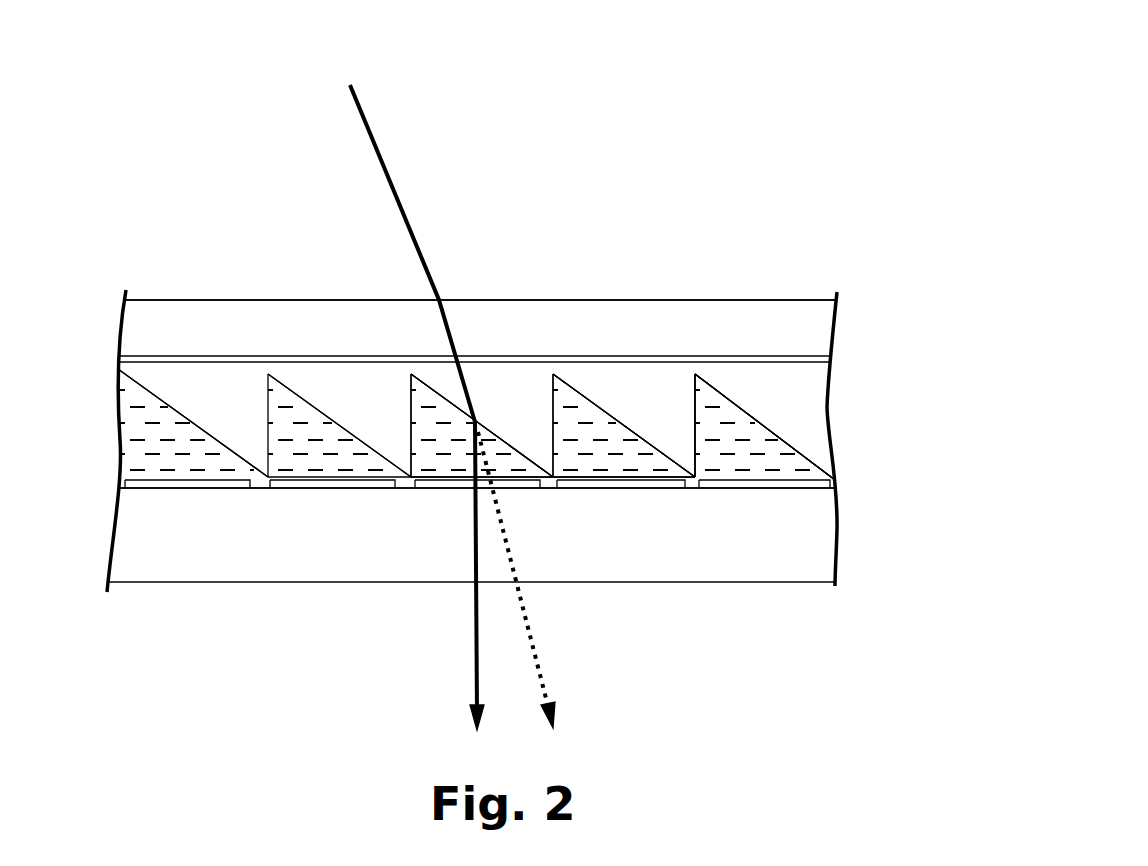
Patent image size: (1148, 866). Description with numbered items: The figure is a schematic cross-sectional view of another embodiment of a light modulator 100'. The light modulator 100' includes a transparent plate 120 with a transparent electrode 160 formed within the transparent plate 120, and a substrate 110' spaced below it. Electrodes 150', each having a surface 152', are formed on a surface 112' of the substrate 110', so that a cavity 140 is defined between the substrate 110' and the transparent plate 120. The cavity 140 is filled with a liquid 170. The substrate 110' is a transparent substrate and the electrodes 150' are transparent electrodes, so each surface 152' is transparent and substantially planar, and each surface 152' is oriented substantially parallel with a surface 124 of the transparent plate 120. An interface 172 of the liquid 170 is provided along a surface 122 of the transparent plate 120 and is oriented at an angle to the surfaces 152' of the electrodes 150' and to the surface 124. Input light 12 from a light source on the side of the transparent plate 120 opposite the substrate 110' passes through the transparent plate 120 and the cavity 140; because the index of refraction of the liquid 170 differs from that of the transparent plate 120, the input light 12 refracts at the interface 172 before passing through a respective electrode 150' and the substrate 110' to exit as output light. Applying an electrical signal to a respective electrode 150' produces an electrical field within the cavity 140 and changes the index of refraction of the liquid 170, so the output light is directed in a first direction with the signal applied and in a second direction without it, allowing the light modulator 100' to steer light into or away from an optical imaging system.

The light modulator 100' is at (460, 312).
The transparent plate 120 is at (826, 286).
The surface of transparent plate 124 is at (207, 300).
The transparent electrode 160 is at (143, 357).
The surface of transparent plate 122 is at (146, 380).
The interface of liquid 172 is at (762, 427).
The cavity 140 is at (318, 451).
The liquid 170 is at (790, 471).
The electrodes 150' is at (694, 367).
The surface of electrode 152' is at (509, 363).
The surface of substrate 112' is at (448, 501).
The substrate 110' is at (506, 535).
The input light 12 is at (362, 117).